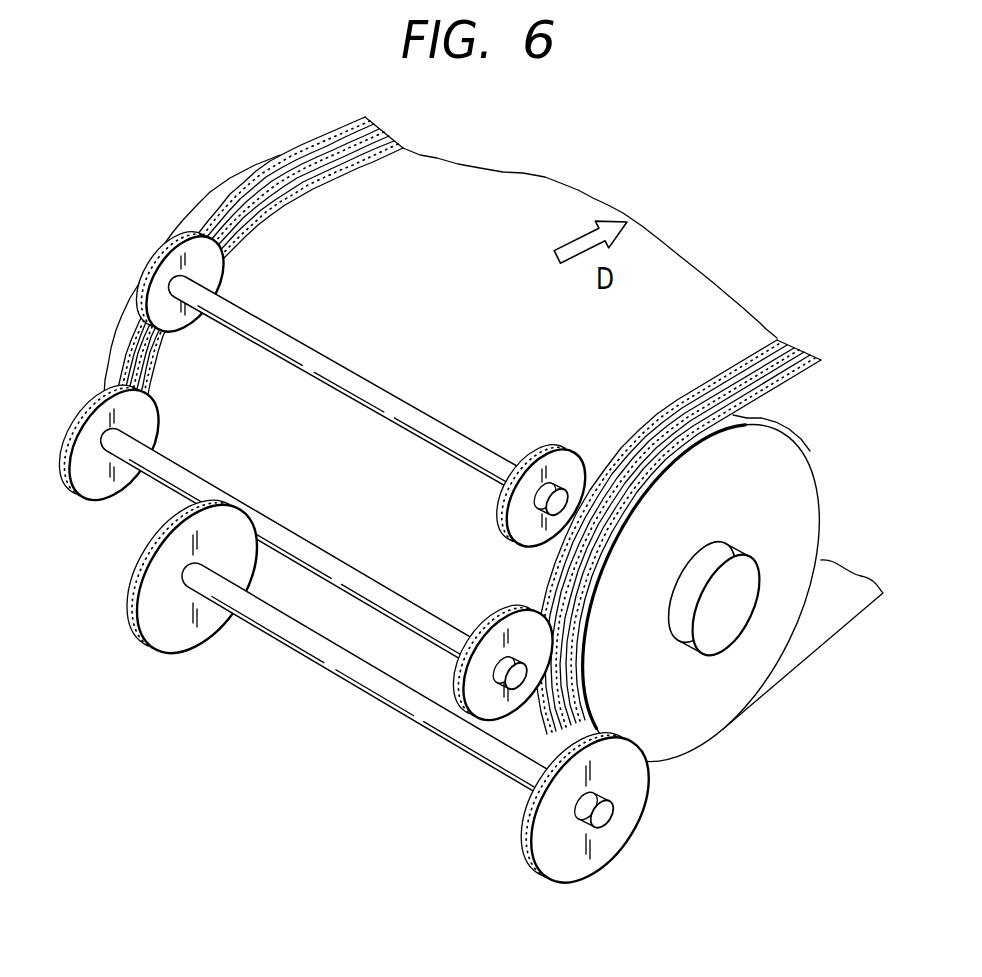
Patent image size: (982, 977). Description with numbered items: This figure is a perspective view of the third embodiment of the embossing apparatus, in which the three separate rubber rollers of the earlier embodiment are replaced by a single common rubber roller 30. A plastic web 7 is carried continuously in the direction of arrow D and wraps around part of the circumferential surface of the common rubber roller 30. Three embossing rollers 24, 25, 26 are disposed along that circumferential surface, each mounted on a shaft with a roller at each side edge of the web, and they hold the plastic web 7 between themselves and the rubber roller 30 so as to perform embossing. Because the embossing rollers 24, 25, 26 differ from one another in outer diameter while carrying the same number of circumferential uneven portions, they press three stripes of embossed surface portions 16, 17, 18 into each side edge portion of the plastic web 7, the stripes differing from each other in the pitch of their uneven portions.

The plastic web 7 is at (810, 377).
The embossed surface portion 16 is at (717, 416).
The embossed surface portion 17 is at (663, 426).
The embossed surface portion 18 is at (621, 446).
The embossing roller 24 is at (183, 320).
The embossing roller 25 is at (80, 393).
The embossing roller 26 is at (140, 567).
The common rubber roller 30 is at (807, 507).